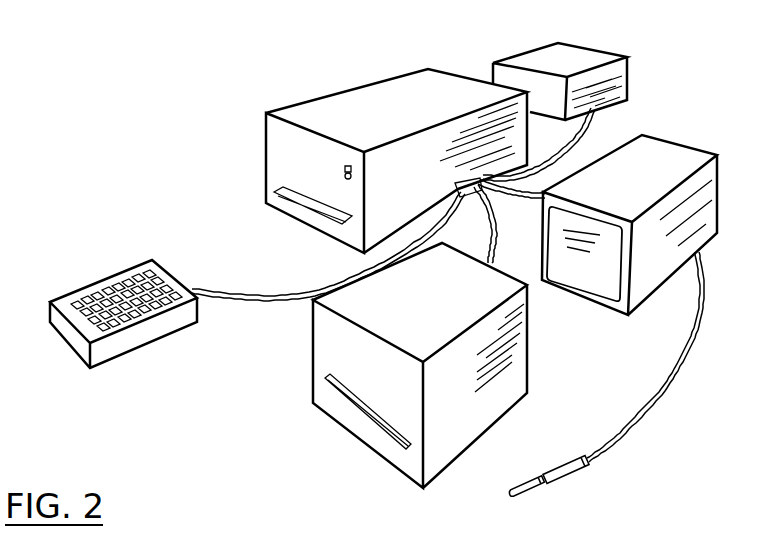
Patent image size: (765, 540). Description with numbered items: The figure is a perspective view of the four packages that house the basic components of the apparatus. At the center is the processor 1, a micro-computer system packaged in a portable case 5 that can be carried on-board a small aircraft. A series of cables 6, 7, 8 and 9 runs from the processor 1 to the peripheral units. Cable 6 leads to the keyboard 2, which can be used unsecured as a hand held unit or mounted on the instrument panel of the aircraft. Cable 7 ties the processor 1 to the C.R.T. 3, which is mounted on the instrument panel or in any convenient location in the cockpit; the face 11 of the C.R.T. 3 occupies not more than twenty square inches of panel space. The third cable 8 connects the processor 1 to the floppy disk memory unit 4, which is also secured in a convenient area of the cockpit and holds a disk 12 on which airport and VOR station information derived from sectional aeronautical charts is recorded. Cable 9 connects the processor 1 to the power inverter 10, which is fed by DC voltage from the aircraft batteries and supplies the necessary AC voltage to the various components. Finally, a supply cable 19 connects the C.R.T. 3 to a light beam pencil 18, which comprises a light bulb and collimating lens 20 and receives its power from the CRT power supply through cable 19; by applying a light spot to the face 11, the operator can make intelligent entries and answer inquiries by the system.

The processor 1 is at (385, 81).
The keyboard 2 is at (154, 264).
The C.R.T. 3 is at (720, 199).
The floppy disk memory unit 4 is at (528, 337).
The portable case 5 is at (265, 151).
The cable 6 is at (276, 297).
The cable 7 is at (536, 191).
The cable 8 is at (494, 258).
The cable 9 is at (596, 145).
The power inverter 10 is at (571, 48).
The face 11 is at (583, 219).
The disk 12 is at (323, 381).
The light beam pencil 18 is at (566, 462).
The supply cable 19 is at (658, 403).
The light bulb and collimating lens 20 is at (545, 495).